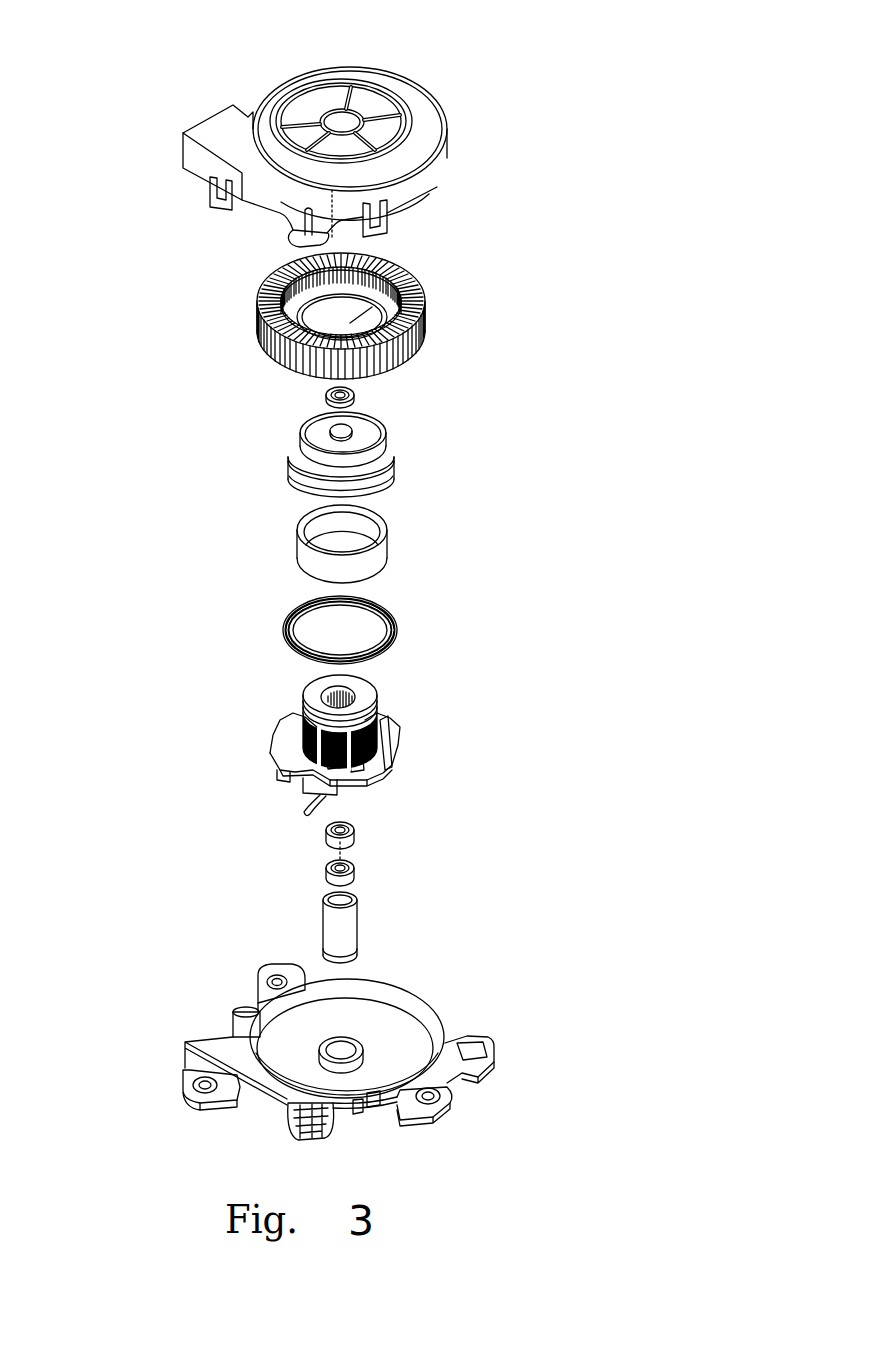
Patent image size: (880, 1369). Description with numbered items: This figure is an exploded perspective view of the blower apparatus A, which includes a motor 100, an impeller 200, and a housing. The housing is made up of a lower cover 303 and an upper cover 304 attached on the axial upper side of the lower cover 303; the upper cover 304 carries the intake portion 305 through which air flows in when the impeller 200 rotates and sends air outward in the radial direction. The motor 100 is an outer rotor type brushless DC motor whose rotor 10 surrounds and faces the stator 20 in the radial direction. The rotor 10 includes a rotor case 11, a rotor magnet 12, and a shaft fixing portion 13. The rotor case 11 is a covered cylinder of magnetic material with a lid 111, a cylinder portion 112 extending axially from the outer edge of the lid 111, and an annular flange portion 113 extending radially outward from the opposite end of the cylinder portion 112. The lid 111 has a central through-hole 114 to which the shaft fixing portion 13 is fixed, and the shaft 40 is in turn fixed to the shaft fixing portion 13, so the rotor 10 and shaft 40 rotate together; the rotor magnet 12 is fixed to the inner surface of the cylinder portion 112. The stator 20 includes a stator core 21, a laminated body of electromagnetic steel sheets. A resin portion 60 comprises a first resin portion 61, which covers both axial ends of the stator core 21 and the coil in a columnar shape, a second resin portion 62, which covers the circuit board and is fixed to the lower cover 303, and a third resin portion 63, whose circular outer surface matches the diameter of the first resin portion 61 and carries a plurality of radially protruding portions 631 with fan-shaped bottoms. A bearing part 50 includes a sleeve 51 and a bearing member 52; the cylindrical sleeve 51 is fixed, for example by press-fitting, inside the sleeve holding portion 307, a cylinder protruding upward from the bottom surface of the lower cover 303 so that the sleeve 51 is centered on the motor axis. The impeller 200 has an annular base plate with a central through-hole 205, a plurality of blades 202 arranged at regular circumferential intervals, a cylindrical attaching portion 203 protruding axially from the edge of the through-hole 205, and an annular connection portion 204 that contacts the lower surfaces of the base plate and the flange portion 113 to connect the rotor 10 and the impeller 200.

The blower apparatus A is at (122, 102).
The upper cover 304 is at (446, 153).
The intake portion 305 is at (360, 96).
The impeller 200 is at (428, 348).
The blades 202 is at (264, 284).
The attaching portion 203 is at (259, 326).
The through-hole 205 is at (424, 294).
The motor 100 is at (150, 582).
The shaft fixing portion 13 is at (356, 395).
The rotor 10 is at (408, 444).
The lid 111 is at (313, 427).
The cylinder portion 112 is at (299, 458).
The flange portion 113 is at (295, 484).
The through-hole 114 is at (354, 430).
The rotor case 11 is at (378, 462).
The rotor magnet 12 is at (386, 534).
The connection portion 204 is at (400, 630).
The stator 20 is at (387, 717).
The stator core 21 is at (370, 732).
The resin portion 60 is at (286, 736).
The first resin portion 61 is at (303, 703).
The second resin portion 62 is at (378, 770).
The third resin portion 63 is at (302, 732).
The protruding portions 631 is at (287, 750).
The bearing part 50 is at (219, 886).
The shaft 40 is at (327, 865).
The bearing member 52 is at (345, 856).
The sleeve 51 is at (331, 933).
The lower cover 303 is at (436, 1010).
The sleeve holding portion 307 is at (352, 1060).